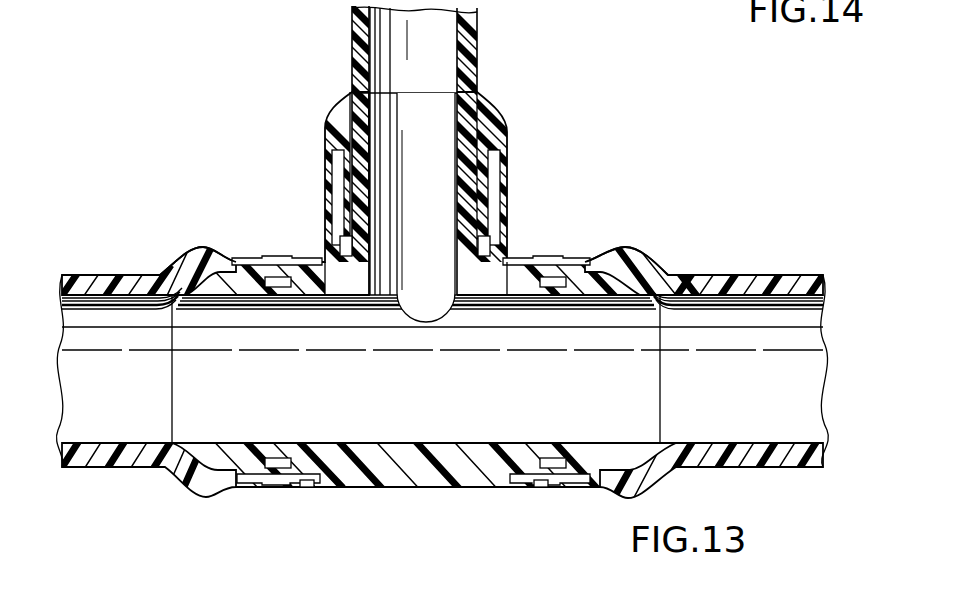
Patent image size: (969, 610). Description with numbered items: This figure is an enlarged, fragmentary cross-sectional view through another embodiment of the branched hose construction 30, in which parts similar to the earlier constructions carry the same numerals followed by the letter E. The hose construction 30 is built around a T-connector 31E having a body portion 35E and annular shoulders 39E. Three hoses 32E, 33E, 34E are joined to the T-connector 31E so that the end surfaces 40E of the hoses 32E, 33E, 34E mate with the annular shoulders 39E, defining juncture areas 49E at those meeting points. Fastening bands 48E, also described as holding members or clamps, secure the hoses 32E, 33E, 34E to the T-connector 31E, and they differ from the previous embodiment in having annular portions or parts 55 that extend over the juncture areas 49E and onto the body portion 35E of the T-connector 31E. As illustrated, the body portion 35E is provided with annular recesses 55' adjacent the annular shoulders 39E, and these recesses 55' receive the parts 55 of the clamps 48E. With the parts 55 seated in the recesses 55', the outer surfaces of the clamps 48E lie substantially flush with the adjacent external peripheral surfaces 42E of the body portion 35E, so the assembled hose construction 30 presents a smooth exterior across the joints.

The branched hose construction 30 is at (618, 160).
The T-connector 31E is at (424, 488).
The hose 32E is at (112, 275).
The hose 33E is at (776, 275).
The hose 34E is at (352, 30).
The body portion 35E is at (392, 488).
The annular shoulder 39E is at (334, 230).
The end surface 40E is at (503, 272).
The external peripheral surface 42E is at (458, 488).
The fastening band 48E is at (262, 258).
The juncture area 49E is at (342, 262).
The annular portion 55 is at (424, 363).
The annular recess 55' is at (392, 207).